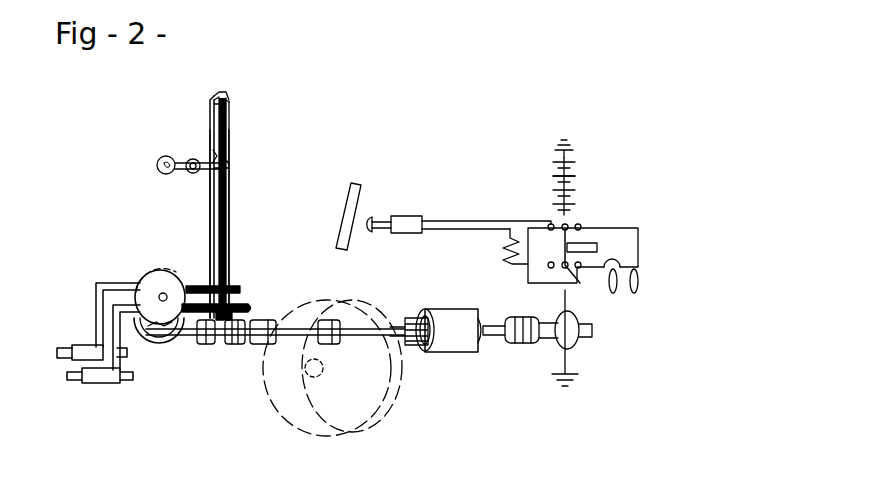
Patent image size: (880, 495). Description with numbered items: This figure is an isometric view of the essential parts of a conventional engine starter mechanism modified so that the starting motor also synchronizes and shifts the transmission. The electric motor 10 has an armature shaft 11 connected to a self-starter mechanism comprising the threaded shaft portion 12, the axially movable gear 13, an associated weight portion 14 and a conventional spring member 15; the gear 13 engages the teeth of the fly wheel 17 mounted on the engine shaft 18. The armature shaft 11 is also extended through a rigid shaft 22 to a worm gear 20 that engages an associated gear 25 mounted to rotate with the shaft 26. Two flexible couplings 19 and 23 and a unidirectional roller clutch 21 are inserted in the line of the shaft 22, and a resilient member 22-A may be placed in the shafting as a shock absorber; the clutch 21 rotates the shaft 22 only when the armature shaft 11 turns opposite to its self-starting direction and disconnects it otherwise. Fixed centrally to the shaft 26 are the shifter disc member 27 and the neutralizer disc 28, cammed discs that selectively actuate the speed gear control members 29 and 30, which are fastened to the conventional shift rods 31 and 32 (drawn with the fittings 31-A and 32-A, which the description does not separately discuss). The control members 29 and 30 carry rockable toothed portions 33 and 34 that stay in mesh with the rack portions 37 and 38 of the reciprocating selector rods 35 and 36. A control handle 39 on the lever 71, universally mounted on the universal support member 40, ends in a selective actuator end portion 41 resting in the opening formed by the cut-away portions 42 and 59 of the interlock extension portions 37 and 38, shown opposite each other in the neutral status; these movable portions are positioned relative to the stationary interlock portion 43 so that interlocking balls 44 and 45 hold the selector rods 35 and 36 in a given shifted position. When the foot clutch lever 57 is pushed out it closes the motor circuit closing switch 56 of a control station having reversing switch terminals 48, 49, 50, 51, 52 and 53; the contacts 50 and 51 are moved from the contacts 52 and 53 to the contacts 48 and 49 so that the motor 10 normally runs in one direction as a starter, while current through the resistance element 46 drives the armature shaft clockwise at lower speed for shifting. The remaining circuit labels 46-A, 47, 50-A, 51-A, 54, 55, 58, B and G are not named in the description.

The electric motor 10 is at (576, 315).
The armature shaft 11 is at (548, 333).
The threaded shaft portion 12 is at (489, 337).
The axially movable gear 13 is at (414, 318).
The motor 14 is at (452, 315).
The spring member 15 is at (523, 300).
The fly wheel 17 is at (357, 413).
The engine shaft 18 is at (316, 378).
The flexible coupling 19 is at (262, 345).
The worm gear 20 is at (172, 340).
The unidirectional roller clutch 21 is at (205, 345).
The rigid shaft 22 is at (282, 326).
The resilient member 22-A is at (236, 345).
The flexible coupling 23 is at (336, 343).
The gear 25 is at (178, 270).
The shaft 26 is at (156, 306).
The shifter disc member 27 is at (158, 343).
The neutralizer disc 28 is at (150, 270).
The speed gear control member 29 is at (112, 313).
The speed gear control member 30 is at (104, 283).
The shift rod 31 is at (57, 353).
The fitting 31-A is at (84, 348).
The shift rod 32 is at (67, 376).
The fitting 32-A is at (96, 383).
The rockable toothed portion 33 is at (240, 289).
The rockable toothed portion 34 is at (249, 305).
The selector rod 35 is at (210, 203).
The selector rod 36 is at (229, 204).
The rack portion 37 is at (210, 108).
The rack portion 38 is at (229, 119).
The control handle 39 is at (157, 166).
The universal support member 40 is at (192, 172).
The selective actuator end portion 41 is at (230, 163).
The cut-away portion 42 is at (222, 171).
The stationary interlock portion 43 is at (222, 104).
The interlocking ball 44 is at (214, 94).
The interlocking ball 45 is at (229, 108).
The resistance element 46 is at (504, 248).
The coil 46-A is at (640, 282).
The wire 47 is at (565, 297).
The reversing switch terminal 48 is at (581, 227).
The reversing switch terminal 49 is at (582, 265).
The contact 50 is at (569, 227).
The armature 50-A is at (570, 242).
The contact 51 is at (572, 268).
The contact bar 51-A is at (598, 247).
The reversing switch terminal 52 is at (551, 268).
The reversing switch terminal 53 is at (549, 225).
The wire 54 is at (451, 221).
The wire 55 is at (455, 230).
The motor circuit closing switch 56 is at (404, 219).
The foot clutch lever 57 is at (358, 190).
The battery 58 is at (553, 180).
The cut-away portion 59 is at (212, 156).
The manually actuated lever 71 is at (163, 152).
The battery B is at (573, 178).
The ground G is at (567, 145).